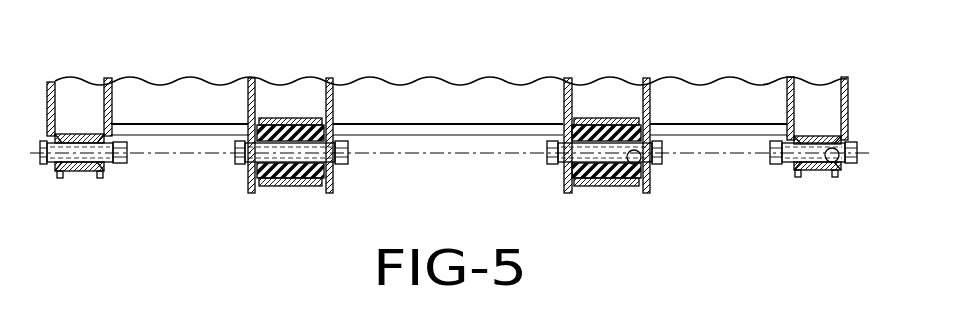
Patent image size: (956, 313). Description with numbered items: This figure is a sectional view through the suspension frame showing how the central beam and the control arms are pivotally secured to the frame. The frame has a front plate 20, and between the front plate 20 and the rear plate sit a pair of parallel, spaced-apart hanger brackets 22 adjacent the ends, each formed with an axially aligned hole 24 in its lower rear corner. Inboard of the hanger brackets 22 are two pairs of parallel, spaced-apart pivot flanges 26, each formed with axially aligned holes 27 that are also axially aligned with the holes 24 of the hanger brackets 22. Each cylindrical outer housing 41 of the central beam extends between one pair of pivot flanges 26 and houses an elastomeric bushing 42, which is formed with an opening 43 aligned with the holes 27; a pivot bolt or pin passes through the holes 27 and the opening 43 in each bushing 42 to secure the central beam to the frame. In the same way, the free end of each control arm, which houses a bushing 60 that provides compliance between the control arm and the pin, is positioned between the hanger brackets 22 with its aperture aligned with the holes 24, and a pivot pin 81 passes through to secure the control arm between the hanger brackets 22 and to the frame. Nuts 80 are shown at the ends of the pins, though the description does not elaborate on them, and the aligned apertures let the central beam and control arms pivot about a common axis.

The front plate 20 is at (461, 100).
The hanger bracket 22 is at (112, 103).
The hole 24 is at (832, 162).
The pivot flange 26 is at (247, 103).
The hole 27 is at (633, 164).
The cylindrical outer housing 41 is at (272, 122).
The elastomeric bushing 42 is at (300, 125).
The opening 43 is at (295, 160).
The bushing 60 is at (80, 138).
The nut 80 is at (349, 157).
The pivot pin 81 is at (78, 160).